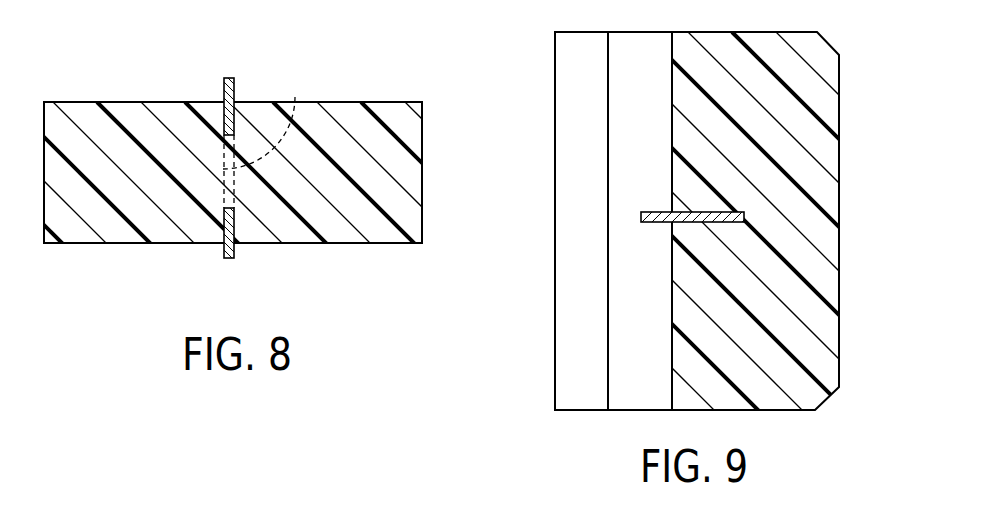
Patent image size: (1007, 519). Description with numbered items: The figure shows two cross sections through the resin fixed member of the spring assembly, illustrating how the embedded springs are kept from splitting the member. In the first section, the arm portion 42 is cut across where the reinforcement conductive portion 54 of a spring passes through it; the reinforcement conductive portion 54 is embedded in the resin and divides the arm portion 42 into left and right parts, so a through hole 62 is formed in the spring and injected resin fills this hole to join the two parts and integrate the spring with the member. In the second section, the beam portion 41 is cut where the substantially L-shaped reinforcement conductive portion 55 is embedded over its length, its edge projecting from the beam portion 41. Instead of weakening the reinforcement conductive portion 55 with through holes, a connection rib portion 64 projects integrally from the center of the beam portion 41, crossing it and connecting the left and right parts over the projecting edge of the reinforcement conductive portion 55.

In FIG. 9, the beam portion 41 is at (839, 182).
In FIG. 8, the arm portion 42 is at (422, 185).
In FIG. 8, the reinforcement conductive portion 54 is at (224, 95).
In FIG. 9, the reinforcement conductive portion 55 is at (651, 222).
In FIG. 8, the through hole 62 is at (271, 118).
In FIG. 9, the connection rib portion 64 is at (555, 253).